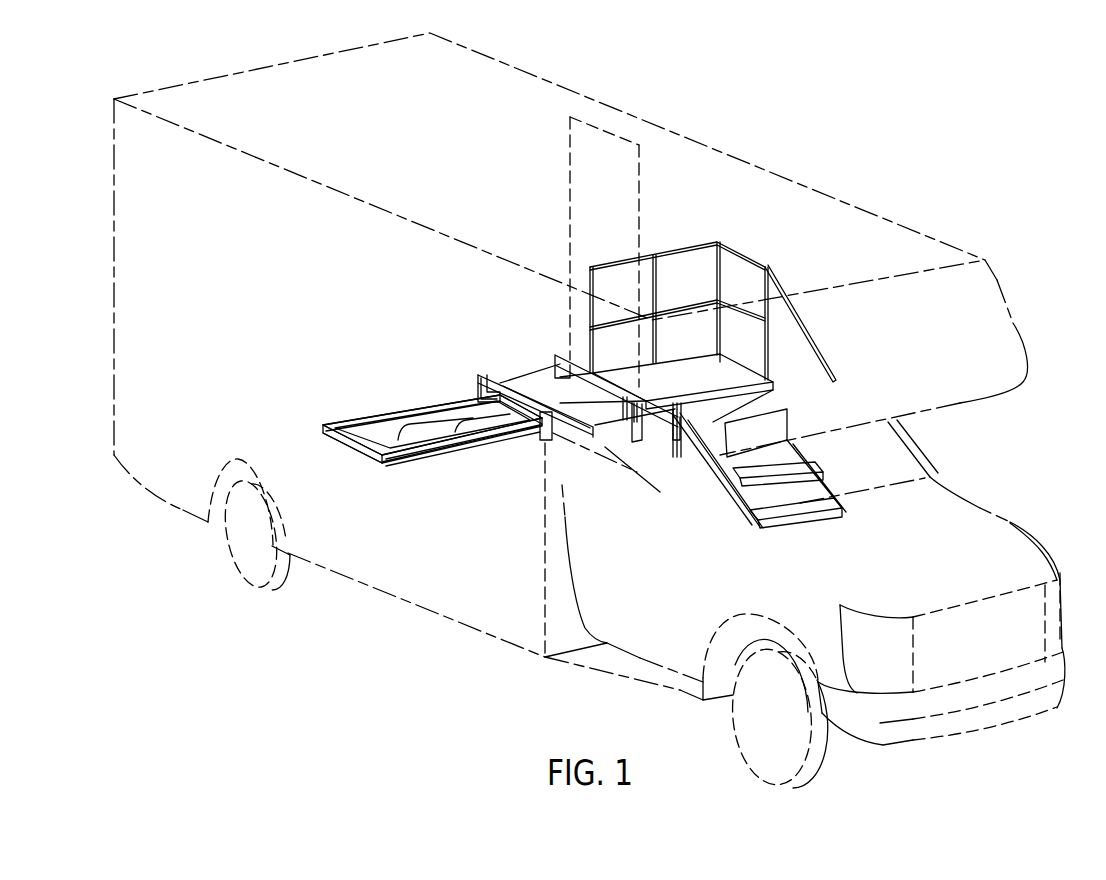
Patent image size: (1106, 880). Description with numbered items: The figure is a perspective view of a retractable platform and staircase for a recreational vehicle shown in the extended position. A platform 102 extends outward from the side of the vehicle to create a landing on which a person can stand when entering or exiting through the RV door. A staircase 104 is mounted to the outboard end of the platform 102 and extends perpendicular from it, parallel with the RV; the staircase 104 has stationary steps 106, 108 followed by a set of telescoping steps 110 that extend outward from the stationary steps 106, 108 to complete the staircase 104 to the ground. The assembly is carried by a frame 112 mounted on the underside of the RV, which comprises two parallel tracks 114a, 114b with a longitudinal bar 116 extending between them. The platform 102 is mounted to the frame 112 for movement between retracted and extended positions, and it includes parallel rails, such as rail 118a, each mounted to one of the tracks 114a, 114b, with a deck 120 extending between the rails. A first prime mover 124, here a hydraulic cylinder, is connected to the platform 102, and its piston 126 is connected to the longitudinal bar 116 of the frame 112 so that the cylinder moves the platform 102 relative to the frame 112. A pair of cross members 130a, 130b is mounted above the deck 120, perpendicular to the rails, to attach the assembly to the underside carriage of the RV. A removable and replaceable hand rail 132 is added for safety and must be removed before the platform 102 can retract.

The platform 102 is at (606, 349).
The staircase 104 is at (828, 417).
The stationary step 106 is at (765, 410).
The stationary step 108 is at (907, 442).
The telescoping steps 110 is at (825, 453).
The frame 112 is at (407, 487).
The parallel track 114a is at (368, 417).
The parallel track 114b is at (393, 465).
The longitudinal bar 116 is at (349, 447).
The parallel rail 118a is at (483, 398).
The deck 120 is at (542, 387).
The first prime mover 124 is at (438, 422).
The piston 126 is at (424, 441).
The cross member 130a is at (583, 430).
The cross member 130b is at (657, 410).
The hand rail 132 is at (688, 247).